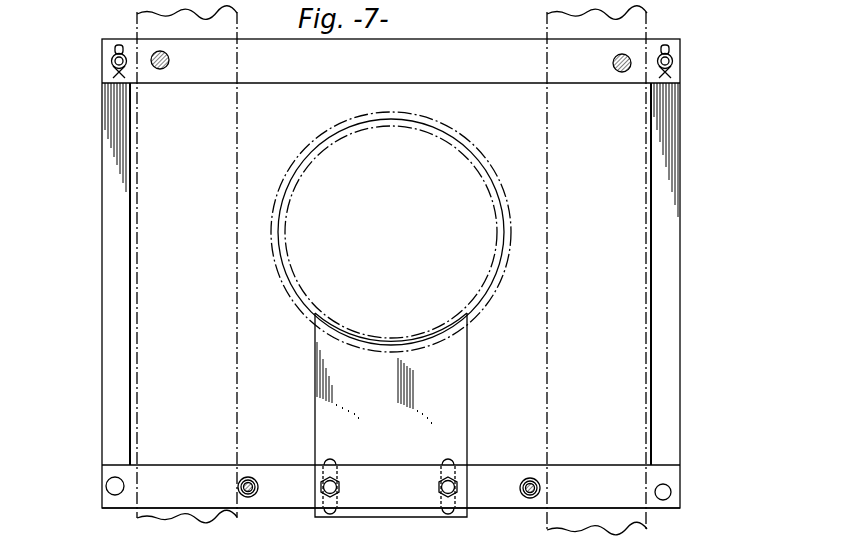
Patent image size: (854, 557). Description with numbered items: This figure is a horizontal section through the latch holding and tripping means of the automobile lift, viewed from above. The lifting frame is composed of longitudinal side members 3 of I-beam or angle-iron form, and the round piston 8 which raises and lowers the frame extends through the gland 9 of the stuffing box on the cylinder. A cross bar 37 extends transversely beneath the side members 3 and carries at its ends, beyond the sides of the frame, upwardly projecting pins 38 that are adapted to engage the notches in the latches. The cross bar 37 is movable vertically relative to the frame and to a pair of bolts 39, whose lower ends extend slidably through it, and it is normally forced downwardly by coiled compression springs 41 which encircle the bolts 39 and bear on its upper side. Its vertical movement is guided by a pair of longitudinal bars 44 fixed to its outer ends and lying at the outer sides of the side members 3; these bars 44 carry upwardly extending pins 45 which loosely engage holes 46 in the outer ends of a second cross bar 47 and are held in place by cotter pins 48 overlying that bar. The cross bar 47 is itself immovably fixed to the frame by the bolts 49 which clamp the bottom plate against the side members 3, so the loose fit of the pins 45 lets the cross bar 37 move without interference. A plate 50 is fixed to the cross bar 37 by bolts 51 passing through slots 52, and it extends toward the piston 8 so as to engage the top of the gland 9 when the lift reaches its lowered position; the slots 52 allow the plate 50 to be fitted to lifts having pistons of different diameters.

The longitudinal side members 3 is at (239, 150).
The piston 8 is at (497, 262).
The gland 9 is at (478, 313).
The cross bar 37 is at (492, 476).
The pins 38 is at (107, 488).
The bolts 39 is at (247, 497).
The coiled compression springs 41 is at (258, 484).
The longitudinal bars 44 is at (108, 282).
The pins 45 is at (111, 60).
The holes 46 is at (113, 71).
The cross bar 47 is at (456, 48).
The cotter pins 48 is at (119, 44).
The bolts 49 is at (163, 70).
The plate 50 is at (457, 391).
The bolts 51 is at (340, 487).
The slots 52 is at (338, 464).